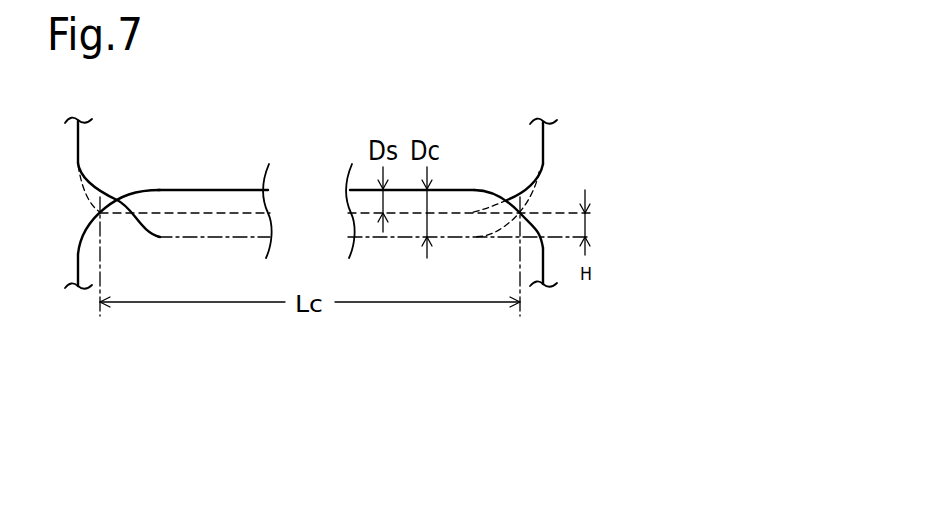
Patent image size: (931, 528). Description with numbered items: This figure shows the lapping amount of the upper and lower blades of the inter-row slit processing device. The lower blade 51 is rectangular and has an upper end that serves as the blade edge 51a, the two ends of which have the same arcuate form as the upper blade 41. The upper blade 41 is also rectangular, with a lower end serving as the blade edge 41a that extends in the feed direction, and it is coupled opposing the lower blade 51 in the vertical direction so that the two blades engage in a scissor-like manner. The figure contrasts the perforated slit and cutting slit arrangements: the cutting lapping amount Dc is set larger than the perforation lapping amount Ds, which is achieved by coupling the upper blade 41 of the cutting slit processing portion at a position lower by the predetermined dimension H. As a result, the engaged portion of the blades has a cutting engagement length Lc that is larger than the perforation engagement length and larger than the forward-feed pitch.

The lower blade 51 is at (78, 258).
The blade edge 51a is at (246, 188).
The upper blade 41 is at (546, 134).
The blade edge 41a is at (230, 238).